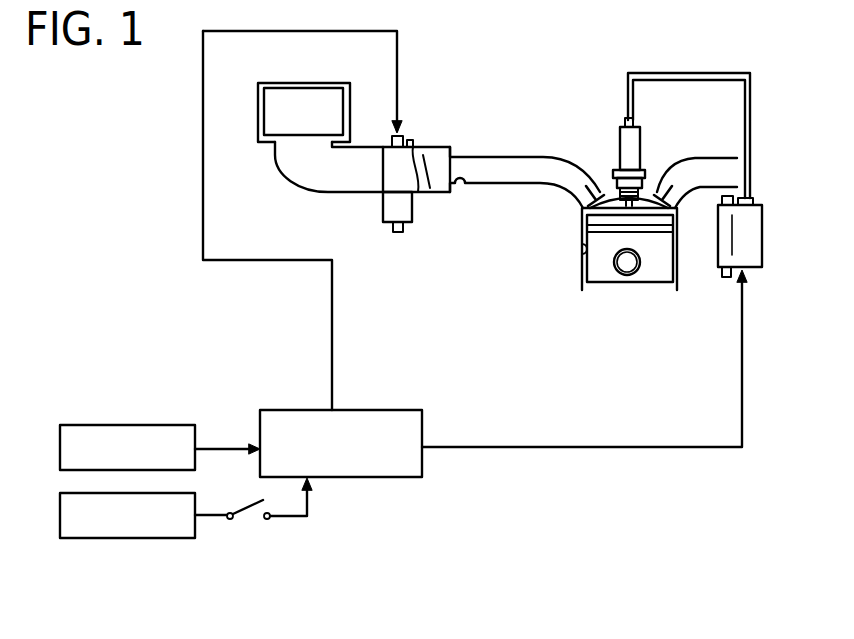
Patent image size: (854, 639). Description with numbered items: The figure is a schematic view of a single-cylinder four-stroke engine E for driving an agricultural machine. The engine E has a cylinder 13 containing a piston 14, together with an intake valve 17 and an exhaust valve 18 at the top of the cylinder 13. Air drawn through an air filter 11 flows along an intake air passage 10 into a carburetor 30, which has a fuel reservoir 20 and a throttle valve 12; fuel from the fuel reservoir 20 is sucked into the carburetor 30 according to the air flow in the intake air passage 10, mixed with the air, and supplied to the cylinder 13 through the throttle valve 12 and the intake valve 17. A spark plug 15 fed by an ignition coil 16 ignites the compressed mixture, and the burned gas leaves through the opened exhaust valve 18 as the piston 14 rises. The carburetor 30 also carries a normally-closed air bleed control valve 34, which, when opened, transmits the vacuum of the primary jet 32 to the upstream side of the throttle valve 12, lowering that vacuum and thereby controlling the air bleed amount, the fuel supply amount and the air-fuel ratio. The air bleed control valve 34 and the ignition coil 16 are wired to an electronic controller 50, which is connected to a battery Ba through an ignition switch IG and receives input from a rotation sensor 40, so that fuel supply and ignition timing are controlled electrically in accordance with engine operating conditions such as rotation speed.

The intake air passage 10 is at (461, 190).
The air filter 11 is at (302, 82).
The throttle valve 12 is at (432, 175).
The cylinder 13 is at (583, 253).
The piston 14 is at (662, 263).
The spark plug 15 is at (641, 143).
The ignition coil 16 is at (763, 212).
The intake valve 17 is at (593, 195).
The exhaust valve 18 is at (658, 193).
The fuel reservoir 20 is at (405, 223).
The carburetor 30 is at (398, 167).
The primary jet 32 is at (413, 140).
The air bleed control valve 34 is at (405, 135).
The rotation sensor 40 is at (142, 424).
The electronic controller 50 is at (402, 478).
The engine E is at (770, 88).
The ignition switch IG is at (248, 517).
The battery Ba is at (148, 538).